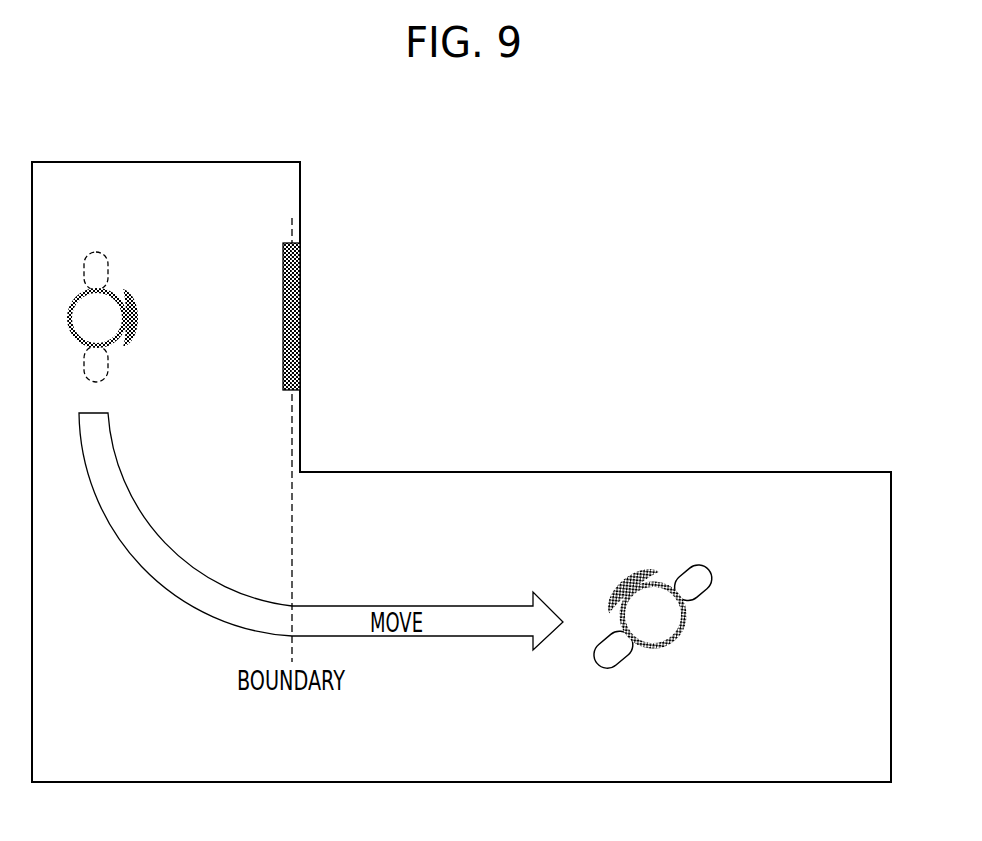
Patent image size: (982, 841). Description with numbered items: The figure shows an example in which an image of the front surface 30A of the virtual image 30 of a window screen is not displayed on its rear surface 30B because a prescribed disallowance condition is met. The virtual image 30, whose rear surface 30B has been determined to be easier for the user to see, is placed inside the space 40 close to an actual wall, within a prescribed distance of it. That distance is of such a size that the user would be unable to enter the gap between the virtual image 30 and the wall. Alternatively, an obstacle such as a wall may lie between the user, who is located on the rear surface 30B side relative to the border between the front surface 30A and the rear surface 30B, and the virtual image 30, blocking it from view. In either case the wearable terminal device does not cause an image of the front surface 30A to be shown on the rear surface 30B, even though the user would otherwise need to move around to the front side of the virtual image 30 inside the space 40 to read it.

The virtual image 30 is at (307, 276).
The front surface 30A is at (282, 263).
The rear surface 30B is at (300, 268).
The space 40 is at (200, 182).